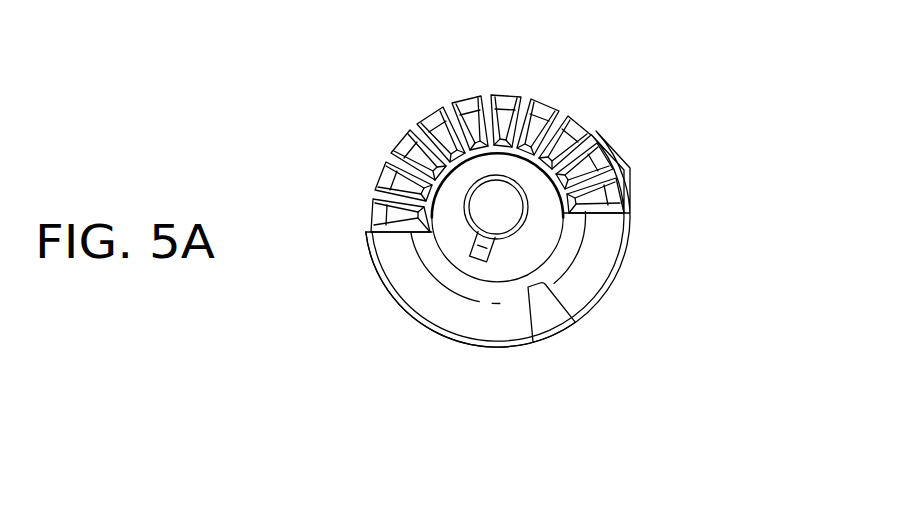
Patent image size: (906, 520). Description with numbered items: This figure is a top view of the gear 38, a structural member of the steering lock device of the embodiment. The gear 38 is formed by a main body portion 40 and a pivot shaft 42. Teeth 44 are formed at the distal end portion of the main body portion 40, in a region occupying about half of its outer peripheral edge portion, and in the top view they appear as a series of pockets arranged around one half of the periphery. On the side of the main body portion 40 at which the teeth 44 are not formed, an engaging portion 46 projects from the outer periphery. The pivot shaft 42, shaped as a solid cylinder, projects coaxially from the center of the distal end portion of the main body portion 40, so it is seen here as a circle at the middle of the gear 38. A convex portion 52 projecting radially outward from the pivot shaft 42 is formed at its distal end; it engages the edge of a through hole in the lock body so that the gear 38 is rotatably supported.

The gear 38 is at (662, 67).
The main body portion 40 is at (621, 157).
The pivot shaft 42 is at (513, 208).
The teeth 44 is at (530, 93).
The engaging portion 46 is at (495, 333).
The convex portion 52 is at (473, 258).